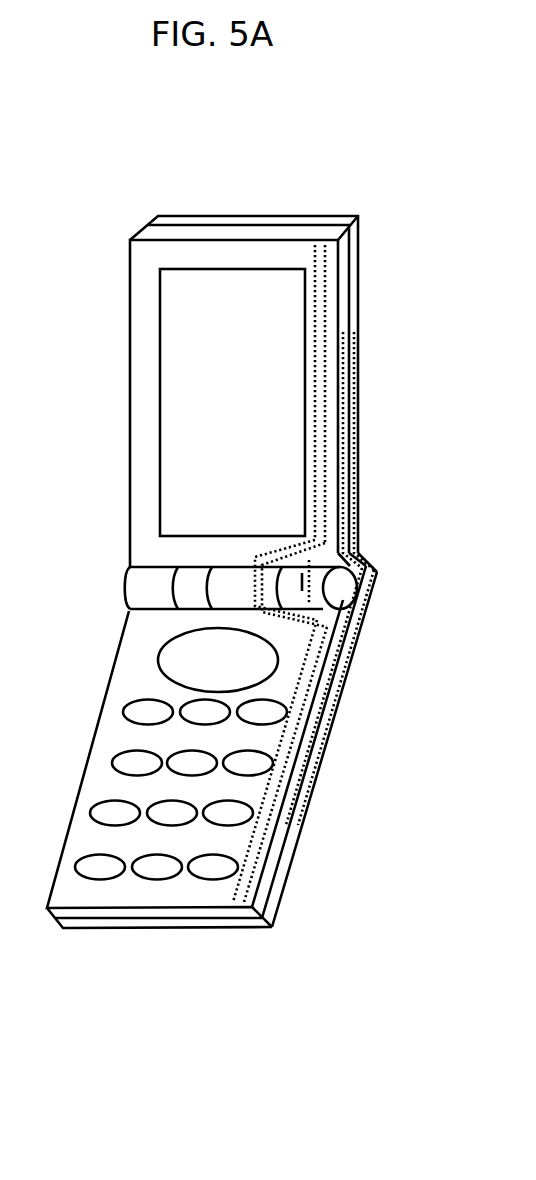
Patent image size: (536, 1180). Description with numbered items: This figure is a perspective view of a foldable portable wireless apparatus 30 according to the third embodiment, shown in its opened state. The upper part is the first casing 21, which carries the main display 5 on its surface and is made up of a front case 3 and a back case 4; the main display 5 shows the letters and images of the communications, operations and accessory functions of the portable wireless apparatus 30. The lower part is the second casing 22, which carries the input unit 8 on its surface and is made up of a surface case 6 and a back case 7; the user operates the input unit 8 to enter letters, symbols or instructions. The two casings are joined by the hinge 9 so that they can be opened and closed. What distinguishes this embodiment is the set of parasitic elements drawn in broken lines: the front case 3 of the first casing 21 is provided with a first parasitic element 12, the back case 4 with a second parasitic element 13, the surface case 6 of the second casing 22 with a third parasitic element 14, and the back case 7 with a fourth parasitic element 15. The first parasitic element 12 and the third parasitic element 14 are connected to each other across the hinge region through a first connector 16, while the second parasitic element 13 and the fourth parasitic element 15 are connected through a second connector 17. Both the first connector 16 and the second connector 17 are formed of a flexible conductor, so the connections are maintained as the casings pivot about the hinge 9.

The portable wireless apparatus 30 is at (363, 200).
The first casing 21 is at (105, 220).
The second casing 22 is at (120, 596).
The front case 3 is at (332, 272).
The back case 4 is at (353, 308).
The main display 5 is at (290, 365).
The first parasitic element 12 is at (325, 433).
The second parasitic element 13 is at (355, 483).
The hinge 9 is at (340, 572).
The second connector 17 is at (302, 586).
The first connector 16 is at (262, 590).
The third parasitic element 14 is at (303, 663).
The fourth parasitic element 15 is at (328, 703).
The back case 7 is at (318, 783).
The input unit 8 is at (250, 793).
The surface case 6 is at (287, 883).